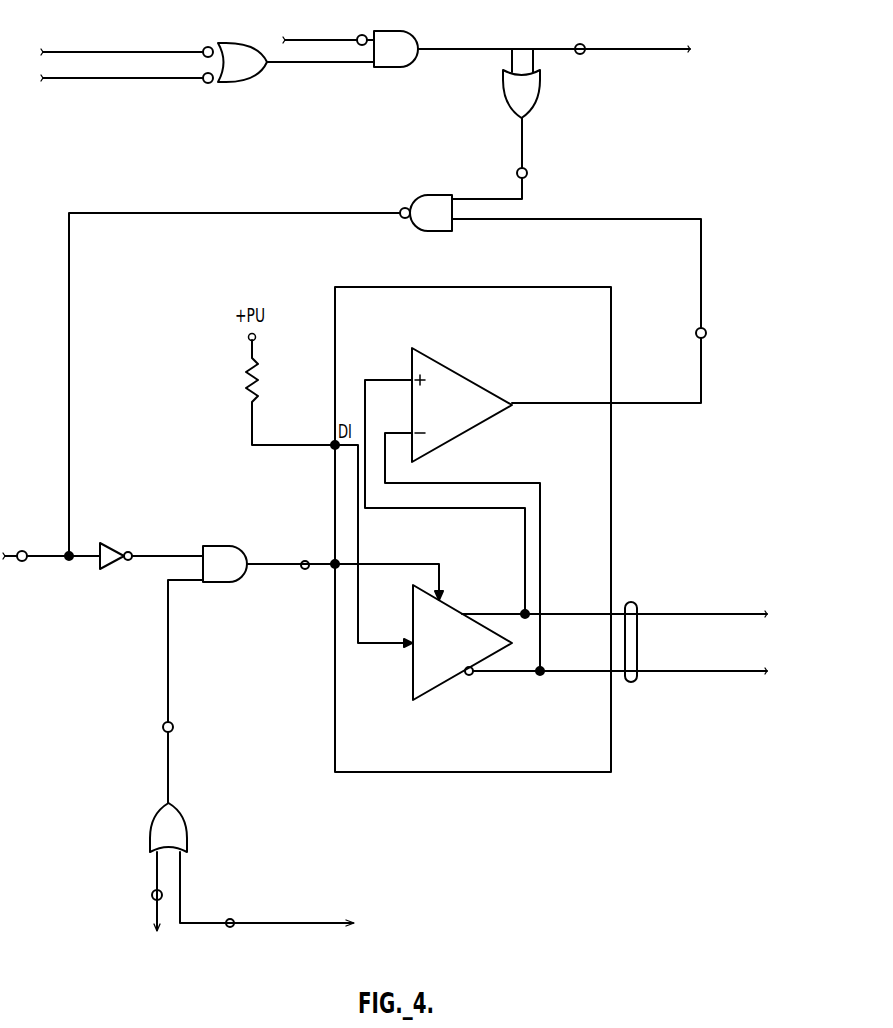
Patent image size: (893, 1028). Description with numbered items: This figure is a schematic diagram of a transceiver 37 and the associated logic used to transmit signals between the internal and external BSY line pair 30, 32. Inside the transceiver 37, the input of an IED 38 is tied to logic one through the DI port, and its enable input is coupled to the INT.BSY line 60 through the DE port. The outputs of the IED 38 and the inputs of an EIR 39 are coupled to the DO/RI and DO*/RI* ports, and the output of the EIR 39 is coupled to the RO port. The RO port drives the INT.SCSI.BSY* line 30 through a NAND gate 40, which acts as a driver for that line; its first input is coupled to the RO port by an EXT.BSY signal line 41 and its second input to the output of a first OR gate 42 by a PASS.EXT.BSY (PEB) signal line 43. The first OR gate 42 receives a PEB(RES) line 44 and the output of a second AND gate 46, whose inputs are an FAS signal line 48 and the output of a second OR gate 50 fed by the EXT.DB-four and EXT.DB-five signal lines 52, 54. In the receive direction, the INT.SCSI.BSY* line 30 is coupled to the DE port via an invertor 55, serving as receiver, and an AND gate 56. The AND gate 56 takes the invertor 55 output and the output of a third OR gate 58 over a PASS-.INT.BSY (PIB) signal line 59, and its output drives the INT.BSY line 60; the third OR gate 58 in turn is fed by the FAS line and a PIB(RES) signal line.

The INT.SCSI.BSY* line 30 is at (23, 550).
The external BSY line 32 is at (631, 601).
The transceiver 37 is at (614, 456).
The IED 38 is at (453, 607).
The EIR 39 is at (485, 391).
The NAND gate 40 is at (434, 194).
The EXT.BSY signal line 41 is at (707, 331).
The first OR gate 42 is at (541, 96).
The PASS.EXT.BSY (PEB) signal line 43 is at (528, 173).
The PEB(RES) line 44 is at (581, 43).
The second AND gate 46 is at (409, 32).
The FAS signal line 48 is at (366, 34).
The second OR gate 50 is at (231, 44).
The EXT.DB4 signal line 52 is at (209, 84).
The EXT.DB5 signal line 54 is at (208, 46).
The invertor 55 is at (103, 542).
The AND gate 56 is at (218, 547).
The third OR gate 58 is at (185, 820).
The PASS-.INT.BSY (PIB) signal line 59 is at (173, 727).
The INT.BSY line 60 is at (306, 570).